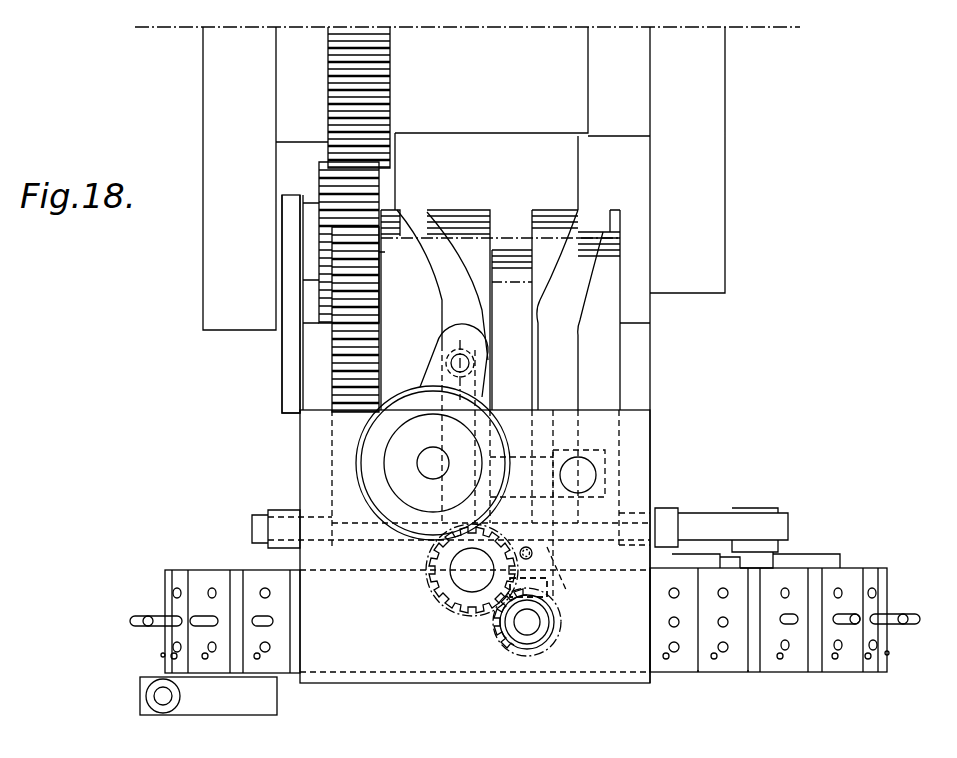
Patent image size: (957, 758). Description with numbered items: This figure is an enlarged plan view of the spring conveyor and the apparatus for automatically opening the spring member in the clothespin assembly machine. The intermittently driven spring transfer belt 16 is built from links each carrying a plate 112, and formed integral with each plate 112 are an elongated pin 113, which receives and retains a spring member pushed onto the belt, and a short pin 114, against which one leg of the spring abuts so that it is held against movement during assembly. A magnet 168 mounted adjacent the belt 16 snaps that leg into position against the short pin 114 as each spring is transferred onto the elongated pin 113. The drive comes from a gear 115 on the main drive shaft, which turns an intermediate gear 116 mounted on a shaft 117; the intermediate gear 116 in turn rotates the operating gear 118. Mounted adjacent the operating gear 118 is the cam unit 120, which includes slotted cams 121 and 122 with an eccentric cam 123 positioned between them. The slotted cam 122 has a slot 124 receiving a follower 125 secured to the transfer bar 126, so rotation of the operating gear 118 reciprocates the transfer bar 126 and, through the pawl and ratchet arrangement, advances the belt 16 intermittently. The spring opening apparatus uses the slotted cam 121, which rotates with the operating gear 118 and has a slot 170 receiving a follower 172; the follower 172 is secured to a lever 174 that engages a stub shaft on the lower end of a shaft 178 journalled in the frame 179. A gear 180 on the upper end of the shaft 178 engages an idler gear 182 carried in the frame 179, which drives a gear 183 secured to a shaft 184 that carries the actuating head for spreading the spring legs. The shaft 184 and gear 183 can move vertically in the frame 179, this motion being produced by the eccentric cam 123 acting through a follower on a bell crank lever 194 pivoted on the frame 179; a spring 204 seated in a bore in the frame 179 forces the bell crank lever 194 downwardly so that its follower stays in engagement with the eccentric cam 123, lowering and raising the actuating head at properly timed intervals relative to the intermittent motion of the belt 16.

The spring transfer belt 16 is at (875, 560).
The plate 112 is at (768, 658).
The elongated pin 113 is at (893, 613).
The short pin 114 is at (890, 653).
The gear 115 is at (382, 67).
The intermediate gear 116 is at (370, 189).
The shaft 117 is at (308, 233).
The operating gear 118 is at (337, 362).
The cam unit 120 is at (490, 200).
The slotted cam 121 is at (442, 210).
The slotted cam 122 is at (548, 210).
The eccentric cam 123 is at (508, 248).
The slot 124 is at (563, 339).
The follower 125 is at (562, 538).
The transfer bar 126 is at (705, 520).
The magnet 168 is at (163, 706).
The slot 170 is at (453, 307).
The follower 172 is at (444, 341).
The lever 174 is at (485, 365).
The shaft 178 is at (433, 463).
The frame 179 is at (643, 443).
The gear 180 is at (395, 525).
The idler gear 182 is at (430, 590).
The gear 183 is at (562, 632).
The shaft 184 is at (510, 633).
The bell crank lever 194 is at (540, 556).
The spring 204 is at (550, 587).